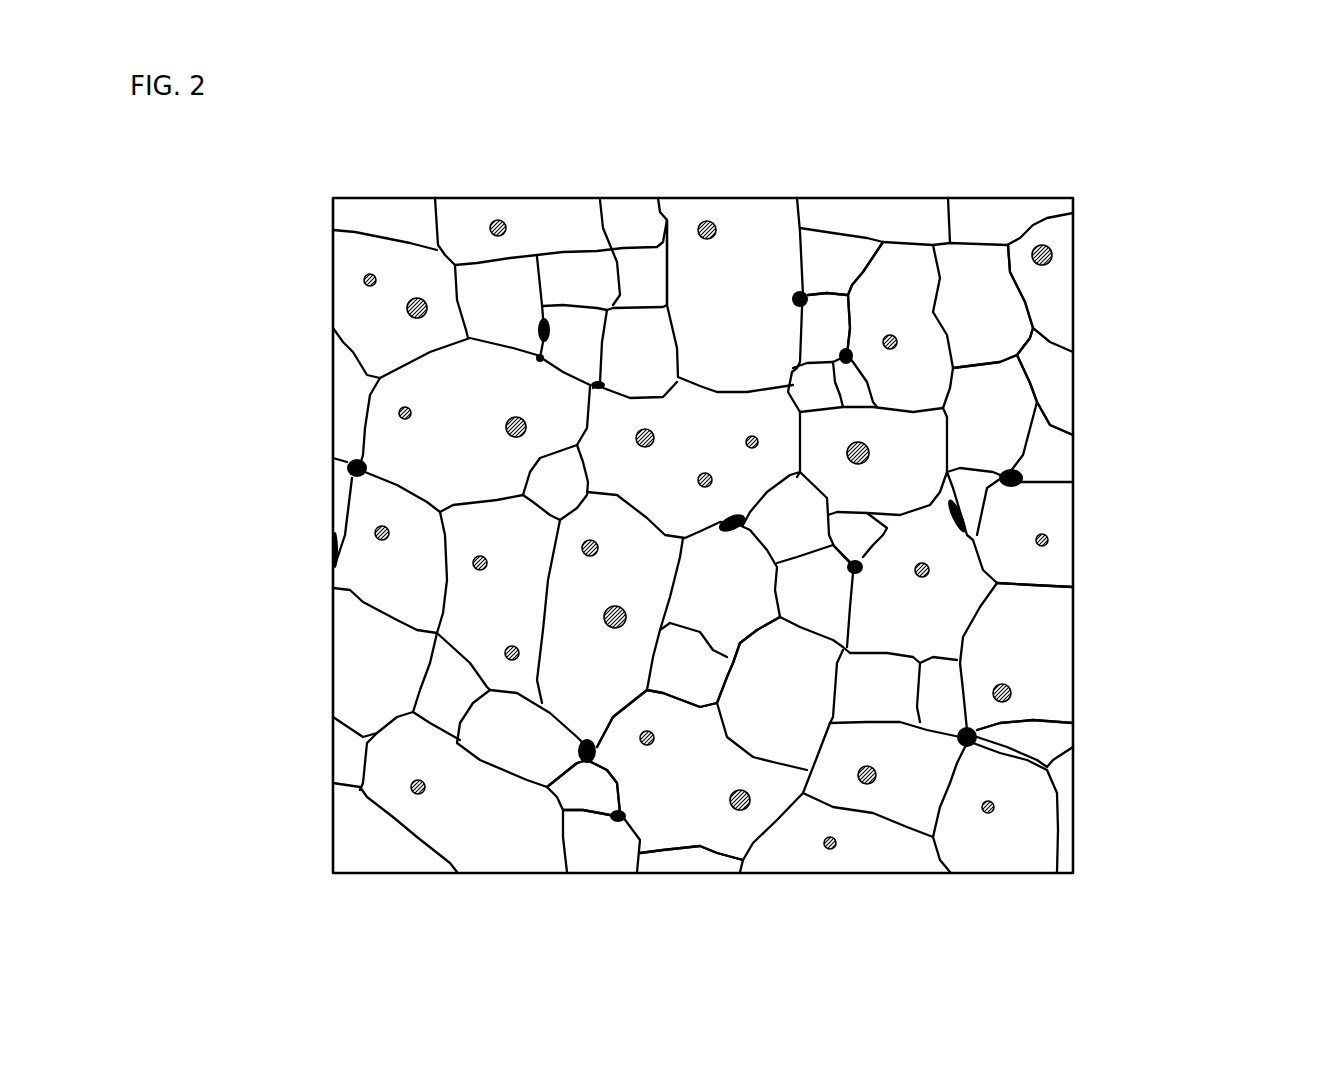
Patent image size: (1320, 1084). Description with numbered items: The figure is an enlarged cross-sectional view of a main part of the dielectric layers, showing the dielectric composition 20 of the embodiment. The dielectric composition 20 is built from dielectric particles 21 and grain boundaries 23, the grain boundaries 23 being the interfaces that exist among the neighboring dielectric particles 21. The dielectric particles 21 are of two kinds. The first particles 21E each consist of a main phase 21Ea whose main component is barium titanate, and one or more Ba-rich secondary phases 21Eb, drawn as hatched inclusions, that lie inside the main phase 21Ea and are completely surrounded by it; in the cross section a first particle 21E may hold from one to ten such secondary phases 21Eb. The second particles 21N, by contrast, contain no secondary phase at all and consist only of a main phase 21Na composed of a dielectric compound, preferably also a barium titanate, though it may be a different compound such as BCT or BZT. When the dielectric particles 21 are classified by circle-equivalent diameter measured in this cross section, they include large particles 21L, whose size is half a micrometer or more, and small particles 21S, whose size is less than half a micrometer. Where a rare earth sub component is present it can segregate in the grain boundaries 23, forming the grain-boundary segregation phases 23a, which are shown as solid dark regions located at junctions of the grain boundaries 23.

The dielectric composition 20 is at (988, 167).
The dielectric particles 21 is at (877, 138).
The first particles 21E is at (741, 230).
The second particles 21N is at (838, 257).
The main phase of second particle 21Na is at (1000, 405).
The main phase of first particle 21Ea is at (1032, 633).
The secondary phase 21Eb is at (1010, 690).
The small particles 21S is at (584, 791).
The large particles 21L is at (688, 811).
The grain boundaries 23 is at (603, 200).
The grain-boundary segregation phases 23a is at (985, 755).